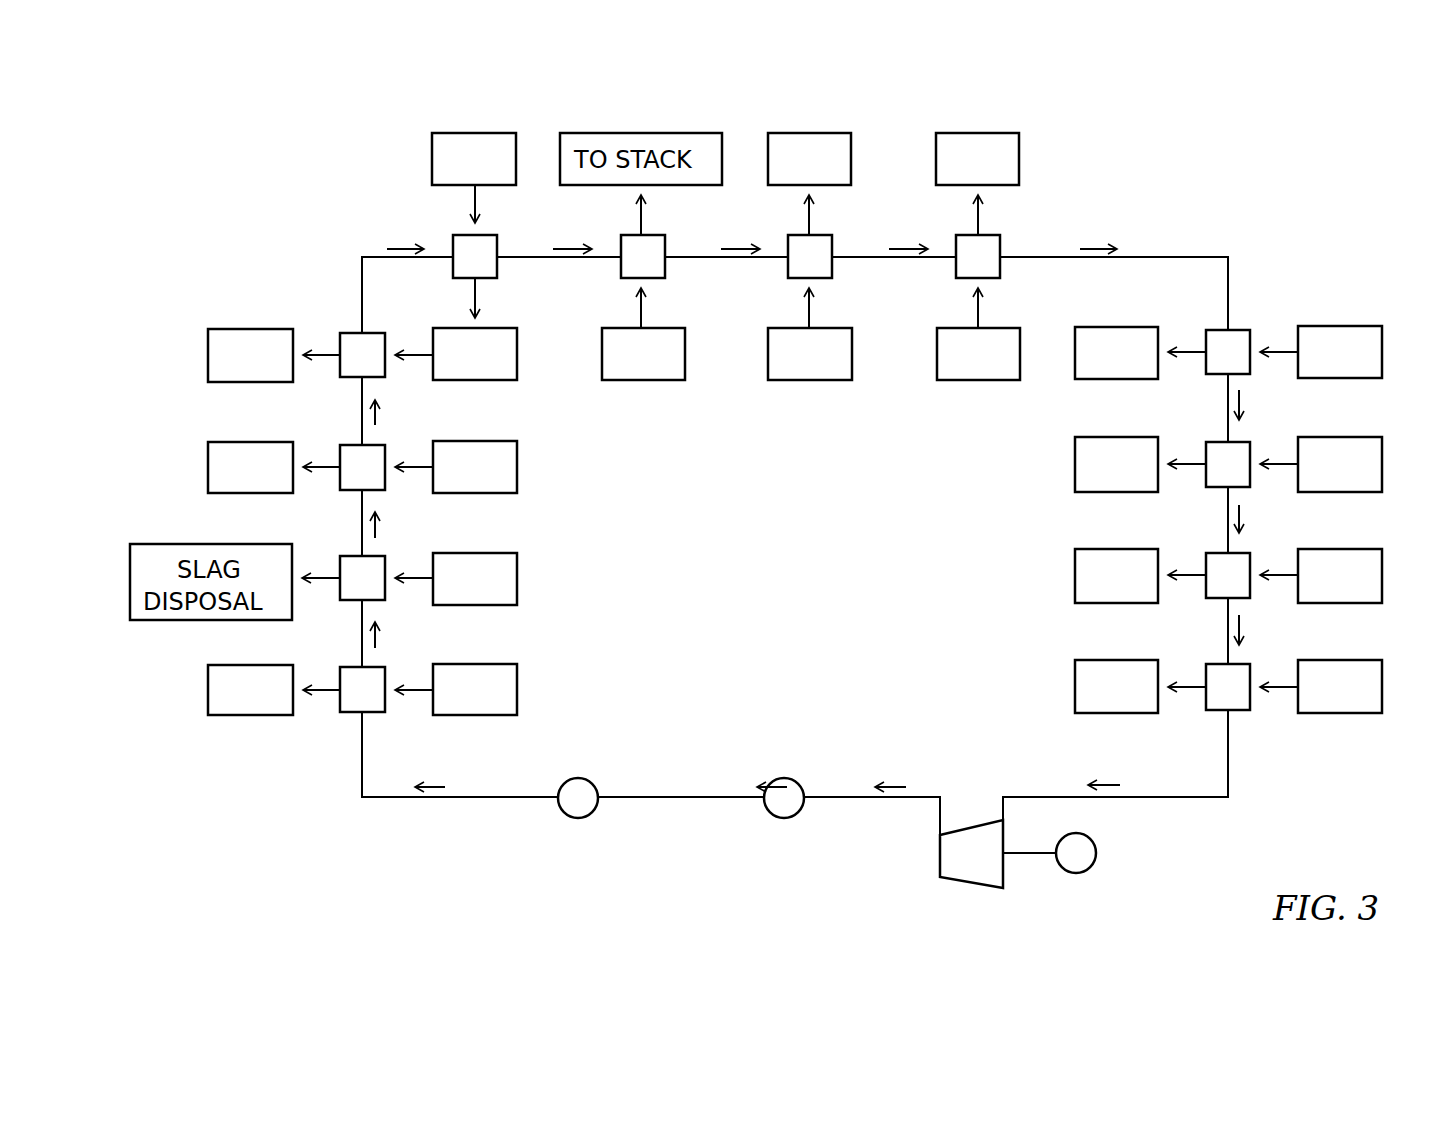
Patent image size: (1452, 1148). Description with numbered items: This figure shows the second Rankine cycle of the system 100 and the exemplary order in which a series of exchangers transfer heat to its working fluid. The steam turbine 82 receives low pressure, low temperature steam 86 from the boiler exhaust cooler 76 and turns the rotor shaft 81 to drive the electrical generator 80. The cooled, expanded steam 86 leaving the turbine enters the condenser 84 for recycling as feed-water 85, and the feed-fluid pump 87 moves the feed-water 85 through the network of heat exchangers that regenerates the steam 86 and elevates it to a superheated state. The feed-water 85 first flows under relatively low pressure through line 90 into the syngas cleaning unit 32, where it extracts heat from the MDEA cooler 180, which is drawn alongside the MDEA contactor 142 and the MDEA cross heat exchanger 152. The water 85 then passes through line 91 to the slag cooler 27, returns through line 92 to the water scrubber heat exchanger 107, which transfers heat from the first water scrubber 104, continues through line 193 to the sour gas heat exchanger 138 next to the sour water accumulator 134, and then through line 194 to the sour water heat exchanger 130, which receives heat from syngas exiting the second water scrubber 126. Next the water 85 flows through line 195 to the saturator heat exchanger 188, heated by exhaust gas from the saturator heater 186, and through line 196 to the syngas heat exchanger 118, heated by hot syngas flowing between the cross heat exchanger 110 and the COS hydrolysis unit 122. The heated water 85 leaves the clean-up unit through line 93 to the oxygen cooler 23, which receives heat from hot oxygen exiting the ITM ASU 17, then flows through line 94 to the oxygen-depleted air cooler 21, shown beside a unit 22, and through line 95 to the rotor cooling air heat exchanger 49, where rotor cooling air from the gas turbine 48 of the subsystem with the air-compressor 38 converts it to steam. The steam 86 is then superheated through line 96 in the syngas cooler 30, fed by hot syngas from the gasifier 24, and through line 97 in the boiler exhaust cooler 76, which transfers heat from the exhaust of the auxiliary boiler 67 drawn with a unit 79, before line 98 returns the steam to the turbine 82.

The system 100 is at (292, 153).
The second water scrubber 126 is at (477, 133).
The line 194 is at (448, 262).
The sour water heat exchanger 130 is at (462, 285).
The line 195 is at (596, 262).
The saturator heat exchanger 188 is at (630, 285).
The COS hydrolysis unit 122 is at (812, 133).
The line 196 is at (763, 262).
The syngas heat exchanger 118 is at (796, 285).
The gasifier 24 is at (981, 133).
The line 93 is at (930, 262).
The oxygen cooler 23 is at (963, 285).
The line 94 is at (1116, 262).
The heat recovery unit 22 is at (1115, 327).
The oxygen-depleted air cooler 21 is at (1220, 378).
The ITM ASU 17 is at (976, 380).
The line 95 is at (1226, 434).
The feed-water 85 is at (404, 247).
The air-compressor 38 is at (1075, 466).
The rotor cooling air heat exchanger 49 is at (1220, 490).
The gas turbine 48 is at (1382, 465).
The line 96 is at (1226, 545).
The steam 86 is at (882, 787).
The syngas cleaning unit 32 is at (1075, 567).
The syngas cooler 30 is at (1220, 602).
The gas line 97 is at (1226, 657).
The combustor 79 is at (1075, 687).
The boiler exhaust cooler 76 is at (1240, 712).
The auxiliary boiler 67 is at (1382, 686).
The gas line 98 is at (1230, 758).
The steam turbine 82 is at (972, 888).
The rotor shaft 81 is at (1033, 855).
The electrical generator 80 is at (1090, 870).
The condenser 84 is at (798, 782).
The feed-fluid pump 87 is at (592, 782).
The line 90 is at (360, 757).
The MDEA cooler 180 is at (352, 714).
The MDEA contactor 142 is at (208, 355).
The MDEA cross heat exchanger 152 is at (517, 686).
The line 91 is at (360, 657).
The slag cooler 27 is at (354, 602).
The line 92 is at (360, 547).
The water scrubber heat exchanger 107 is at (354, 492).
The first water scrubber 104 is at (517, 465).
The line 193 is at (360, 434).
The sour gas heat exchanger 138 is at (354, 380).
The sour water accumulator 134 is at (462, 380).
The saturator heater 186 is at (642, 380).
The cross heat exchanger 110 is at (810, 380).